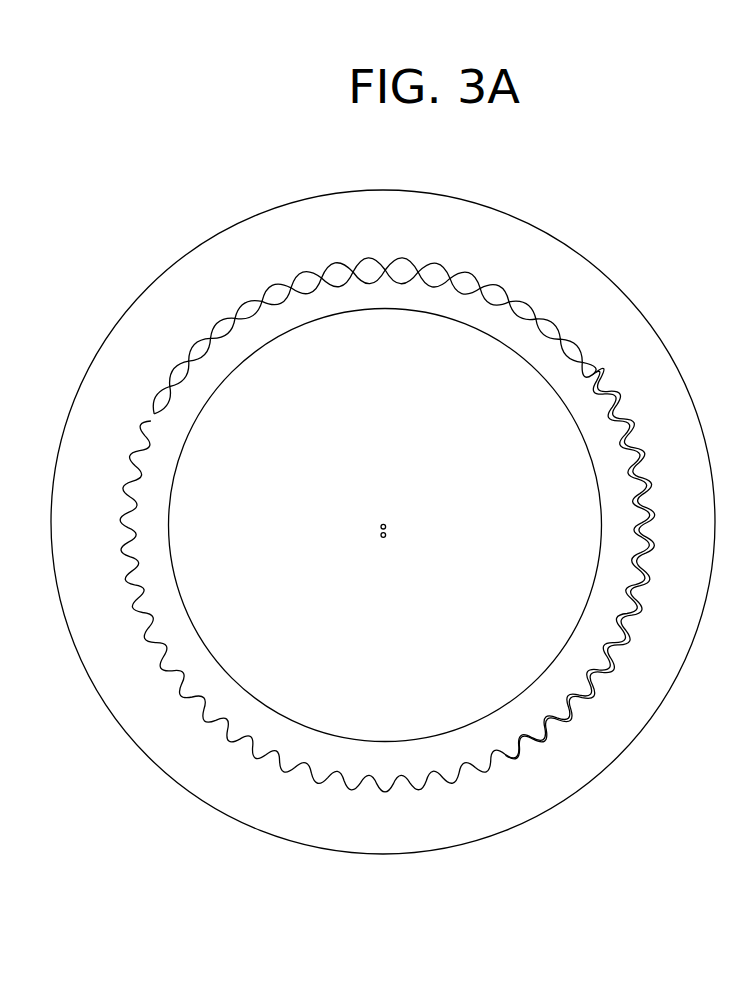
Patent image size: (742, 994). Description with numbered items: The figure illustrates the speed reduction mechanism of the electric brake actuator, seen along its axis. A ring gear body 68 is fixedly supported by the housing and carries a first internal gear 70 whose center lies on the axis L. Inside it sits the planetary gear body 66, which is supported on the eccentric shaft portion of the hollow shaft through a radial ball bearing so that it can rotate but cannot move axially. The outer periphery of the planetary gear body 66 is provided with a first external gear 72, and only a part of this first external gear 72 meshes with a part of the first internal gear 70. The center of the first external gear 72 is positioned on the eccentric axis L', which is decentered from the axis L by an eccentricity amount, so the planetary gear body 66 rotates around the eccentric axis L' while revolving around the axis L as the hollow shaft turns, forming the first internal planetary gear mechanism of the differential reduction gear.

The planetary gear body 66 is at (388, 297).
The ring gear body 68 is at (522, 248).
The first internal gear 70 is at (422, 277).
The first external gear 72 is at (460, 285).
The axis L is at (421, 513).
The eccentric axis L' is at (423, 556).